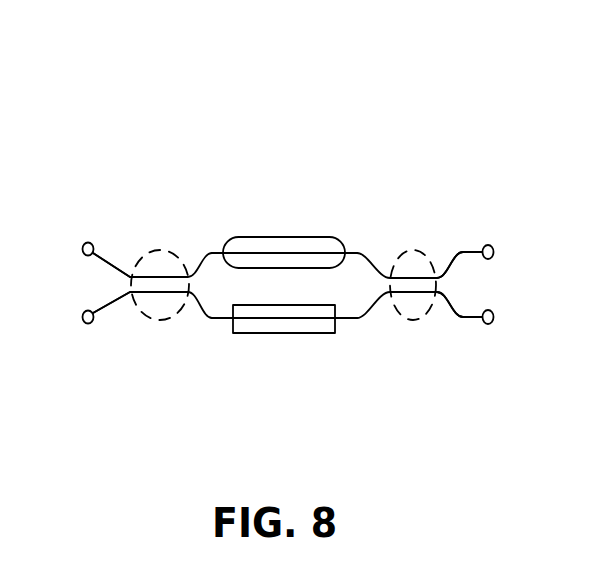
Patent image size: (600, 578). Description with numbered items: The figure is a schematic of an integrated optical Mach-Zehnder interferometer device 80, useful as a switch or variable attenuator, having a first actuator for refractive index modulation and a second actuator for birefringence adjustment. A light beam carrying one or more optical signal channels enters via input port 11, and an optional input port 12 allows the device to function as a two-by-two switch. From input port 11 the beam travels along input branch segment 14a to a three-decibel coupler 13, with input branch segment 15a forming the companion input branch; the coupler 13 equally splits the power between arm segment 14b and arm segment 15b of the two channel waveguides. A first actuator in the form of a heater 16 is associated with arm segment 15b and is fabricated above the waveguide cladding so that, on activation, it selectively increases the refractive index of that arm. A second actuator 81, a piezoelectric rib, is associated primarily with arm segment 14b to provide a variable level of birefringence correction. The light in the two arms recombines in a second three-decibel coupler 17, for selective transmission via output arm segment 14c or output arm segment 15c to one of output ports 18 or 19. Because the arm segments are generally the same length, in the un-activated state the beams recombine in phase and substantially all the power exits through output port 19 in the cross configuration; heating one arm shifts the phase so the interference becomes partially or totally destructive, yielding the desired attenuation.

The integrated optical Mach-Zehnder interferometer device 80 is at (178, 112).
The input port 11 is at (93, 242).
The input port 12 is at (92, 324).
The 3 dB coupler 13 is at (180, 309).
The input branch segment 14a is at (117, 266).
The arm segment 14b is at (259, 253).
The output arm segment 14c is at (455, 262).
The input branch segment 15a is at (118, 298).
The arm segment 15b is at (298, 318).
The output arm segment 15c is at (455, 307).
The heater 16 is at (257, 341).
The second 3 dB coupler 17 is at (395, 300).
The output port 18 is at (486, 244).
The output port 19 is at (485, 325).
The second actuator 81 is at (322, 230).